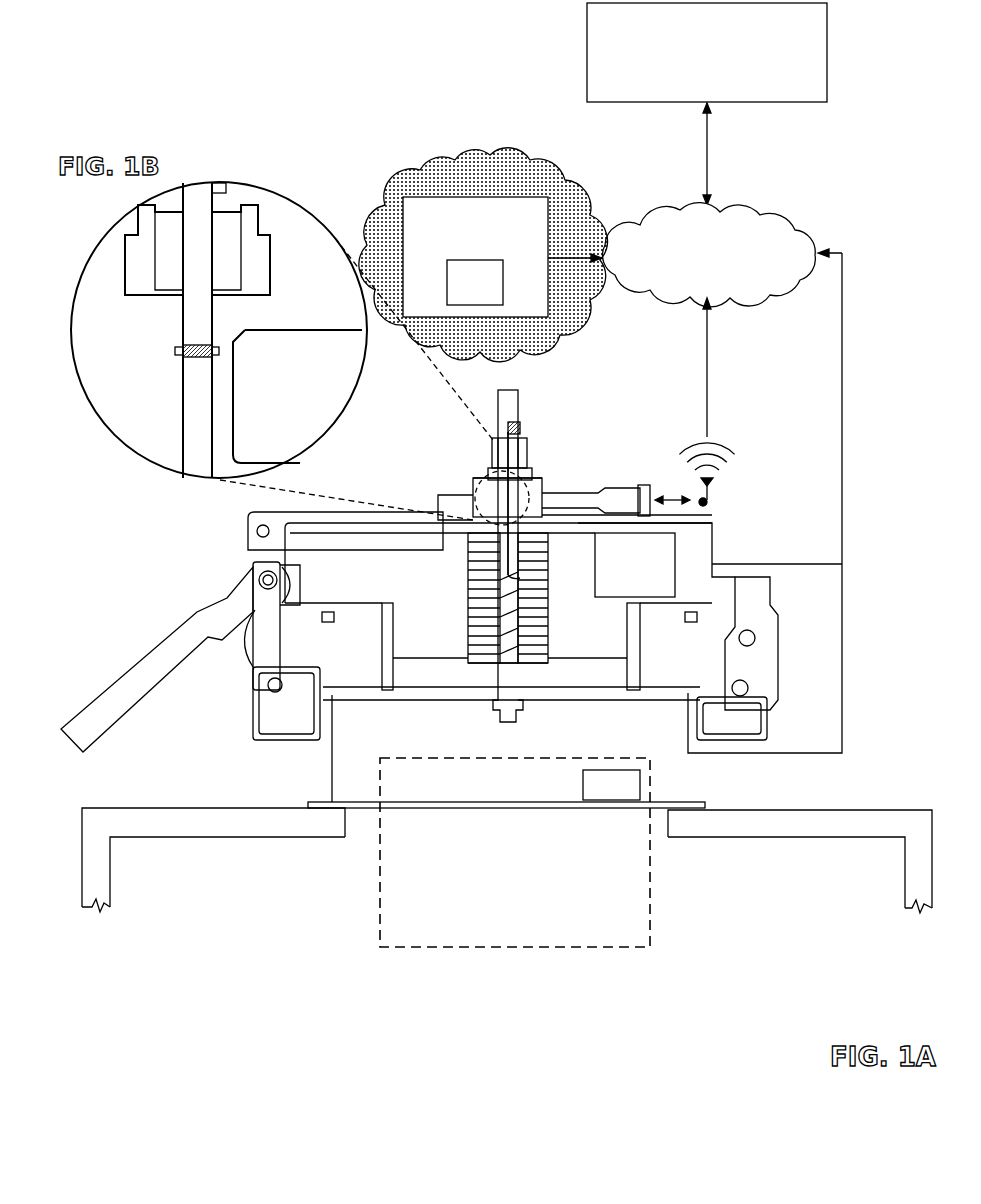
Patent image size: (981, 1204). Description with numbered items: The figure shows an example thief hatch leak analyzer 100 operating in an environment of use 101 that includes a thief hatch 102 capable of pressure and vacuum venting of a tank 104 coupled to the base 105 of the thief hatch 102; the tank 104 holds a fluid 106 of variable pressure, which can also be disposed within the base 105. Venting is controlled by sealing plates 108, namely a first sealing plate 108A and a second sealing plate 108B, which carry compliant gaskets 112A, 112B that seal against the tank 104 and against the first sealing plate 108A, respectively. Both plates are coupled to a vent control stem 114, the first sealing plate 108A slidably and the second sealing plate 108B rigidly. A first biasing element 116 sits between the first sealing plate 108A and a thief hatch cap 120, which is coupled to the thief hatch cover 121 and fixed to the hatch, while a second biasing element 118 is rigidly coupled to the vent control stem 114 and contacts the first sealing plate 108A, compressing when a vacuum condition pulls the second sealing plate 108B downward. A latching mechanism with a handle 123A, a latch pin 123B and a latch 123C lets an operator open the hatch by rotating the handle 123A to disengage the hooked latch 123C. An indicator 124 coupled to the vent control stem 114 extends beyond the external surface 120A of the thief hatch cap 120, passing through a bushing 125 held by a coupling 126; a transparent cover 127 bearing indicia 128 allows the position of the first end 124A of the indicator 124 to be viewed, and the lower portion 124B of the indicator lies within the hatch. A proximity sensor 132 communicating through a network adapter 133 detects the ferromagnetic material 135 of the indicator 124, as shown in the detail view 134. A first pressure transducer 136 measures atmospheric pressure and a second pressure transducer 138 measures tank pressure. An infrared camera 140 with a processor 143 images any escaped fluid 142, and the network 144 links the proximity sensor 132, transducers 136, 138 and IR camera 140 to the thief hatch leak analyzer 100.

In FIG. 1A, the thief hatch leak analyzer 100 is at (707, 52).
In FIG. 1A, the environment of use 101 is at (190, 118).
In FIG. 1A, the thief hatch 102 is at (195, 507).
In FIG. 1A, the tank 104 is at (100, 873).
In FIG. 1A, the base 105 is at (333, 797).
In FIG. 1A, the fluid 106 is at (515, 852).
In FIG. 1A, the sealing plates 108 is at (367, 663).
In FIG. 1A, the first sealing plate 108A is at (380, 603).
In FIG. 1A, the second sealing plate 108B is at (395, 703).
In FIG. 1A, the gasket 112A is at (327, 618).
In FIG. 1A, the gasket 112B is at (383, 700).
In FIG. 1A, the vent control stem 114 is at (490, 662).
In FIG. 1A, the first biasing element 116 is at (468, 560).
In FIG. 1A, the second biasing element 118 is at (495, 628).
In FIG. 1A, the thief hatch cap 120 is at (442, 498).
In FIG. 1A, the external surface 120A is at (473, 478).
In FIG. 1A, the thief hatch cover 121 is at (250, 533).
In FIG. 1A, the handle 123A is at (150, 650).
In FIG. 1A, the latch pin 123B is at (259, 580).
In FIG. 1A, the latch 123C is at (253, 697).
In FIG. 1B, the indicator 124 is at (183, 335).
In FIG. 1A, the indicator 124 is at (468, 542).
In FIG. 1A, the first end 124A is at (500, 438).
In FIG. 1A, the stem lower end 124B is at (512, 582).
In FIG. 1A, the bushing 125 is at (527, 458).
In FIG. 1A, the coupling 126 is at (532, 475).
In FIG. 1A, the cover 127 is at (519, 400).
In FIG. 1A, the indicia 128 is at (521, 430).
In FIG. 1B, the proximity sensor 132 is at (255, 330).
In FIG. 1A, the proximity sensor 132 is at (605, 488).
In FIG. 1A, the network adapter 133 is at (712, 500).
In FIG. 1B, the detail view 134 is at (110, 212).
In FIG. 1A, the detail view 134 is at (485, 462).
In FIG. 1B, the ferromagnetic material 135 is at (180, 353).
In FIG. 1A, the first pressure transducer 136 is at (635, 565).
In FIG. 1A, the second pressure transducer 138 is at (611, 785).
In FIG. 1A, the infrared (IR) camera 140 is at (475, 257).
In FIG. 1A, the fluid 142 is at (478, 160).
In FIG. 1A, the processor 143 is at (475, 282).
In FIG. 1A, the network 144 is at (795, 215).